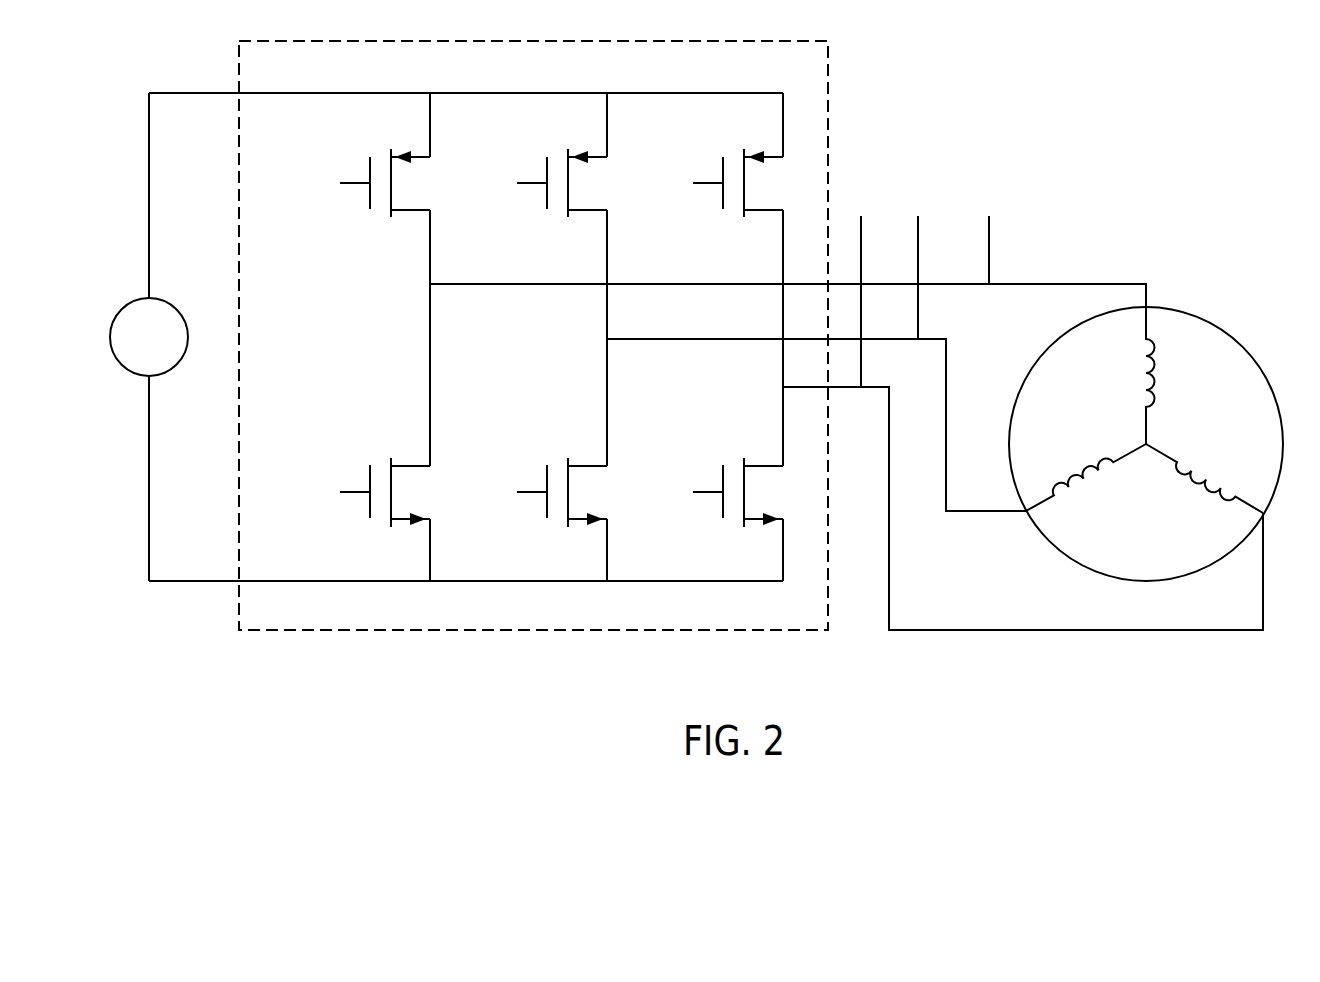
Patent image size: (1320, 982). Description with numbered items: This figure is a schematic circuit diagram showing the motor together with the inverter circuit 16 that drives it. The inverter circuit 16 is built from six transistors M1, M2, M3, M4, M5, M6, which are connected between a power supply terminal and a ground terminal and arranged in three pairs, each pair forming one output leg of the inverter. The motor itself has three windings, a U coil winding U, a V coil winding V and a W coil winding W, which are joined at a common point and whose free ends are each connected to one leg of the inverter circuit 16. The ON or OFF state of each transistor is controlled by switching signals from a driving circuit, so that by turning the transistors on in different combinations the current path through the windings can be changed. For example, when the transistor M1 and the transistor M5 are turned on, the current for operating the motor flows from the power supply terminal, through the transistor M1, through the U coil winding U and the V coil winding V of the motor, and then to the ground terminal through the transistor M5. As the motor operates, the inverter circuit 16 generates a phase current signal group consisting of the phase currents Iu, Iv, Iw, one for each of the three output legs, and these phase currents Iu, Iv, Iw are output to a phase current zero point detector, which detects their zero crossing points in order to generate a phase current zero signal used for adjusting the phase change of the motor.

The inverter circuit 16 is at (524, 335).
The transistor M1 is at (362, 204).
The transistor M2 is at (540, 204).
The transistor M3 is at (714, 204).
The transistor M4 is at (363, 514).
The transistor M5 is at (541, 514).
The transistor M6 is at (715, 514).
The phase current Iu is at (985, 235).
The phase current Iv is at (916, 262).
The phase current Iw is at (860, 286).
The U coil winding U is at (1159, 359).
The V coil winding V is at (1073, 495).
The W coil winding W is at (1223, 494).